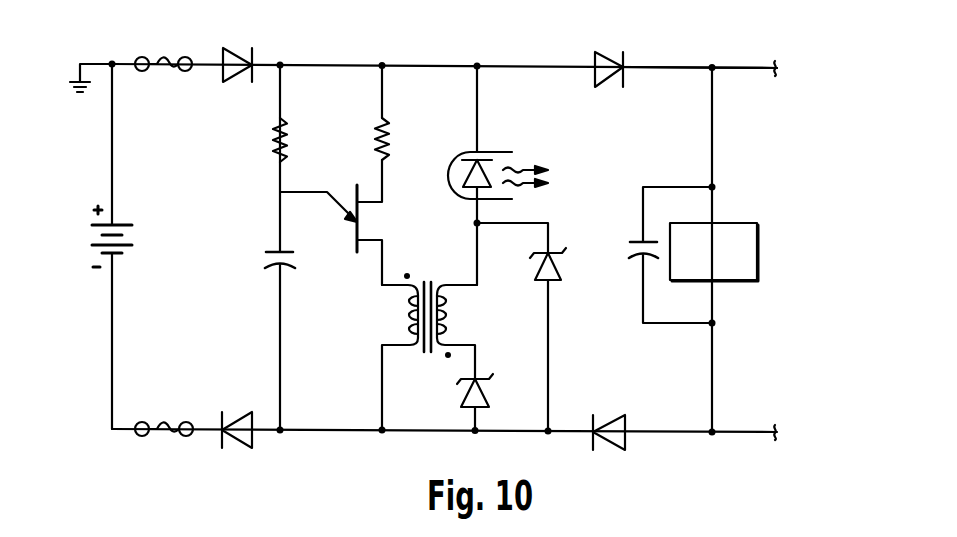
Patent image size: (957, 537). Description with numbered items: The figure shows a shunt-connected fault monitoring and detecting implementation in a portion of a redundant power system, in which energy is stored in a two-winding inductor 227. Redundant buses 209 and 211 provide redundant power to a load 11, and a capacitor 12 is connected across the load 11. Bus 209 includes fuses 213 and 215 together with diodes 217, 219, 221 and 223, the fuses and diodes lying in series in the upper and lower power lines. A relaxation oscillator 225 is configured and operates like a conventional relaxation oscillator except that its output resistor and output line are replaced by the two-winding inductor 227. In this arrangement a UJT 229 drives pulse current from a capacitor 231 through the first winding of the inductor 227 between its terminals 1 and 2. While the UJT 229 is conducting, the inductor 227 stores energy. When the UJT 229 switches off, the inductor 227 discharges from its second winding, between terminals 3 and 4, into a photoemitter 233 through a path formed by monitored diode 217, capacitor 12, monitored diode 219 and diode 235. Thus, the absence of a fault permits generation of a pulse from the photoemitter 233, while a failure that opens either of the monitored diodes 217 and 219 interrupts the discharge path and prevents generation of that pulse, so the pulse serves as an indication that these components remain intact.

The load 11 is at (736, 223).
The capacitor 12 is at (630, 255).
The bus 209 is at (657, 67).
The bus 211 is at (724, 67).
The fuse 213 is at (170, 56).
The fuse 215 is at (164, 423).
The diode 217 is at (608, 57).
The diode 219 is at (611, 415).
The diode 221 is at (241, 48).
The diode 223 is at (247, 413).
The relaxation oscillator 225 is at (350, 145).
The two-winding inductor 227 is at (436, 287).
The UJT 229 is at (355, 248).
The capacitor 231 is at (274, 267).
The photoemitter 233 is at (458, 156).
The diode 235 is at (489, 396).
The winding terminal 1 is at (370, 287).
The winding terminal 2 is at (367, 357).
The winding terminal 3 is at (493, 287).
The winding terminal 4 is at (493, 350).